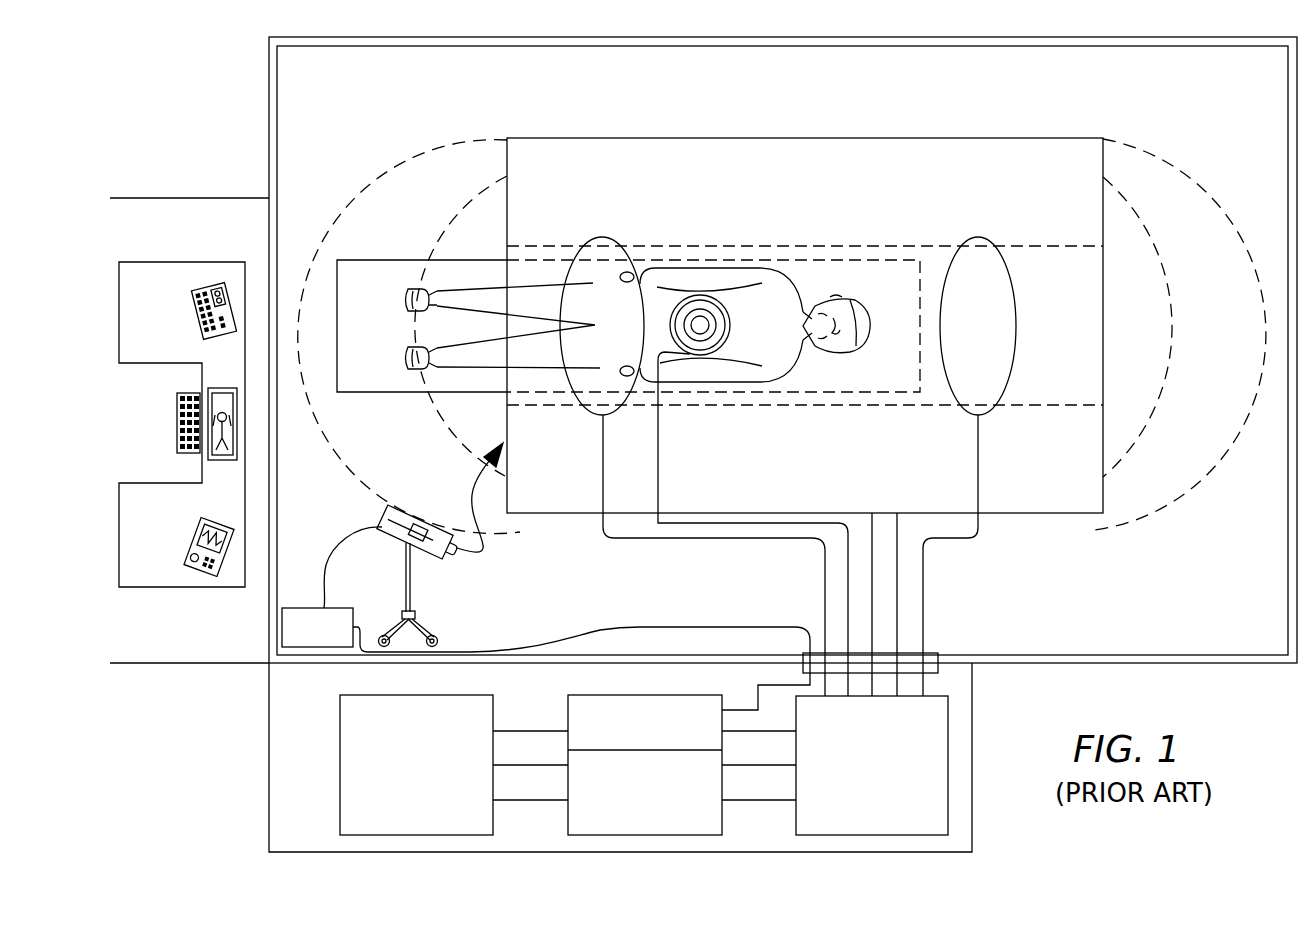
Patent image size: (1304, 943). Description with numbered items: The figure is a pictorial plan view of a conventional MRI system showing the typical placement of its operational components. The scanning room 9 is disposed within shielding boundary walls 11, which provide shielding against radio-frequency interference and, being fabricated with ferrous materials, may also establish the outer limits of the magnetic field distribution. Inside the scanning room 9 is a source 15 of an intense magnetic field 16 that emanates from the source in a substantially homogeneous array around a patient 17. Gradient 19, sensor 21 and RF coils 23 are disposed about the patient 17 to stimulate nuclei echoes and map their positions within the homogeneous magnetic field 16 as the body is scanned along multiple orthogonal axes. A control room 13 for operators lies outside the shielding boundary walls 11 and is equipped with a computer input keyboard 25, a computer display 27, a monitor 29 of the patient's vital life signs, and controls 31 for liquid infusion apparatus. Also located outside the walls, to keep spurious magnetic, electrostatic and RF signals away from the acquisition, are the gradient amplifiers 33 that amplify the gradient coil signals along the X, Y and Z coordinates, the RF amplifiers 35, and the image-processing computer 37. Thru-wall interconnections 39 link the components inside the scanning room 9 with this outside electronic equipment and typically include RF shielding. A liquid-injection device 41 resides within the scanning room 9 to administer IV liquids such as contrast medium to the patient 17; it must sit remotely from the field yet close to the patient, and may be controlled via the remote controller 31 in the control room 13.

The scanning room 9 is at (963, 92).
The shielding boundary walls 11 is at (284, 47).
The control room 13 is at (228, 235).
The source of intense magnetic field 15 is at (862, 162).
The magnetic field 16 is at (443, 232).
The patient 17 is at (777, 362).
The gradient coil 19 is at (980, 237).
The sensor coil 21 is at (602, 237).
The RF coil 23 is at (722, 300).
The computer input keyboard 25 is at (177, 445).
The computer display 27 is at (224, 388).
The monitor of patient's vital life signs 29 is at (193, 541).
The controls for liquid infusion apparatus 31 is at (197, 315).
The gradient amplifiers 33 is at (796, 818).
The RF amplifiers 35 is at (568, 708).
The image-processing computer 37 is at (493, 820).
The thru-wall interconnections 39 is at (808, 602).
The liquid-injection device 41 is at (385, 587).